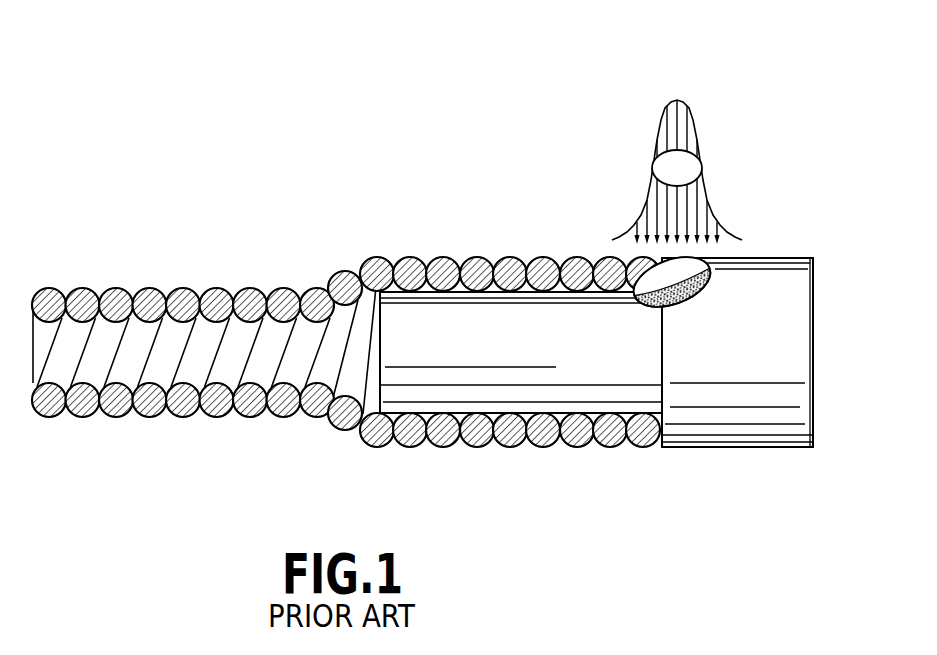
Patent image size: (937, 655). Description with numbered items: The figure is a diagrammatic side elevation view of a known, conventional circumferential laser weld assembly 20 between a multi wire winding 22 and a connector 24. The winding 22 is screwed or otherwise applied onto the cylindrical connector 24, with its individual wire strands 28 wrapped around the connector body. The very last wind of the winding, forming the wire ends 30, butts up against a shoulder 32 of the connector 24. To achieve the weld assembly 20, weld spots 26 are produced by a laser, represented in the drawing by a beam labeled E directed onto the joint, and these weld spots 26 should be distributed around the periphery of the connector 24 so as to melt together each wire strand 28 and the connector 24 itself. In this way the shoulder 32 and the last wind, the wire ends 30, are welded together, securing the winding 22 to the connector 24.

The laser weld assembly 20 is at (343, 84).
The multi wire winding 22 is at (226, 263).
The connector 24 is at (769, 464).
The weld spots 26 is at (702, 280).
The wire strand 28 is at (510, 262).
The wire ends 30 is at (647, 437).
The shoulder 32 is at (660, 350).